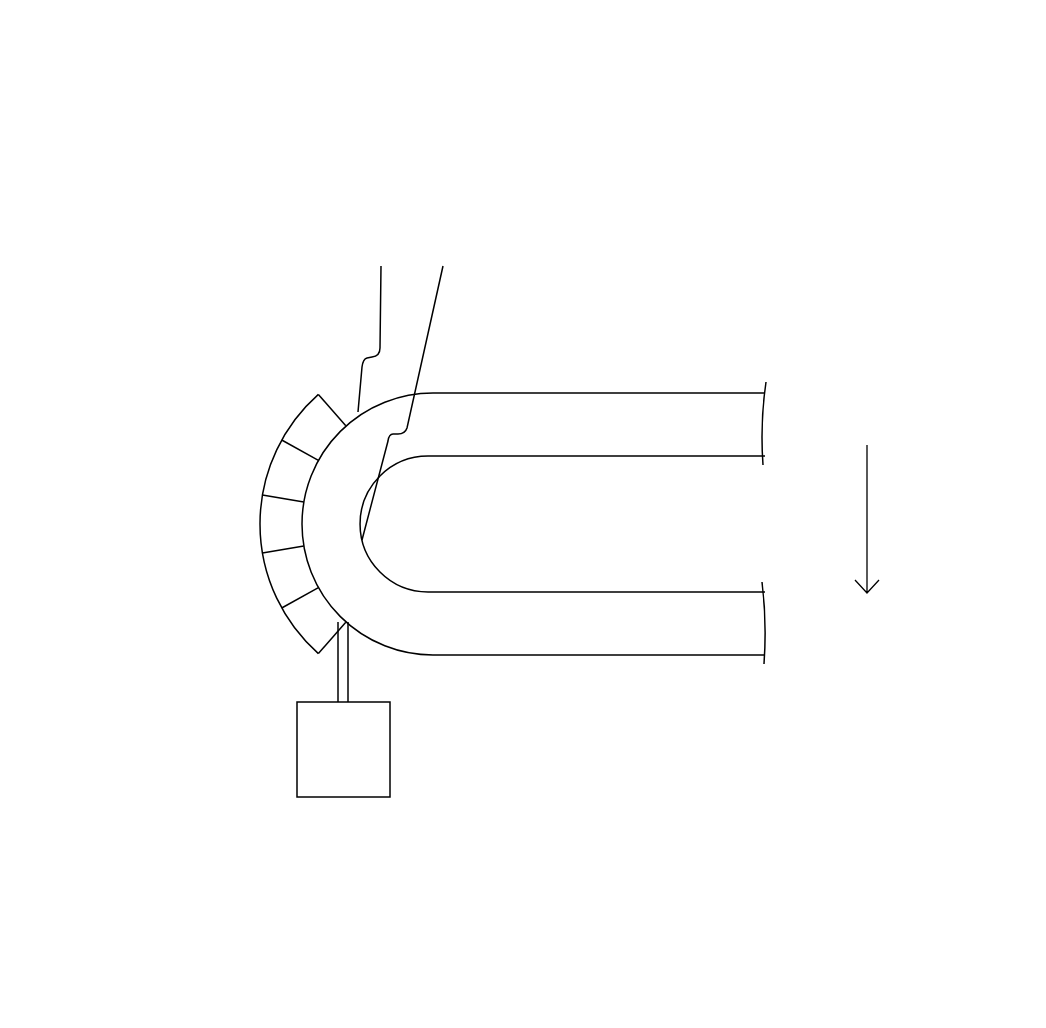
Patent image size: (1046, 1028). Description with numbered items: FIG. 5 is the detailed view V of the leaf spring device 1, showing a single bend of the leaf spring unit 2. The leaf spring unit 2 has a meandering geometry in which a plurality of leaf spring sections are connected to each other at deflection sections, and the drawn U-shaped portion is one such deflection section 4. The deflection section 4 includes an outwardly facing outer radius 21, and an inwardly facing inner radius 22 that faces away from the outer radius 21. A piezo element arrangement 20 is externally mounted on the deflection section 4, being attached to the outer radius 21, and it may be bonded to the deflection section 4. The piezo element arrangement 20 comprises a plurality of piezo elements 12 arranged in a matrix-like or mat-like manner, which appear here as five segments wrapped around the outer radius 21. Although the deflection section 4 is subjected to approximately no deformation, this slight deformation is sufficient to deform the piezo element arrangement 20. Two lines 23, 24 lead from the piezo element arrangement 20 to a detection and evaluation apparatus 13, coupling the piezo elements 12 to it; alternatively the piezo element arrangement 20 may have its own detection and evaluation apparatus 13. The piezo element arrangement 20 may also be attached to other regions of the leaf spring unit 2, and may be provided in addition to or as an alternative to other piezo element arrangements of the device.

The leaf spring device 1 is at (434, 84).
The leaf spring unit 2 is at (723, 382).
The deflection section 4 is at (478, 242).
The outer radius 21 is at (379, 324).
The inner radius 22 is at (411, 388).
The piezo element arrangement 20 is at (118, 363).
The piezo element 12 is at (315, 423).
The detection and evaluation apparatus 13 is at (362, 765).
The line 23 is at (338, 686).
The line 24 is at (348, 669).